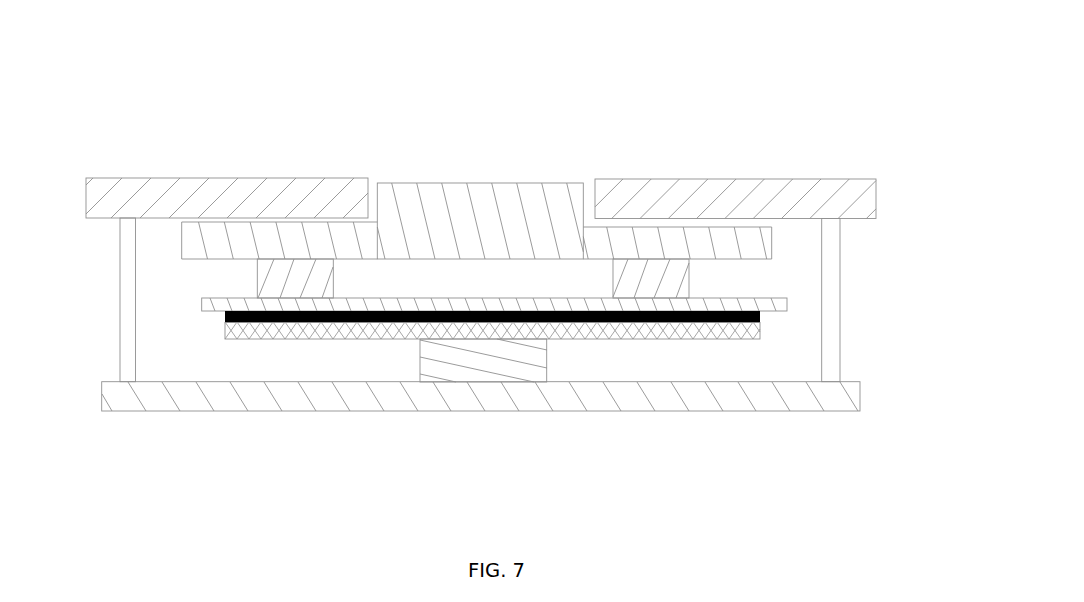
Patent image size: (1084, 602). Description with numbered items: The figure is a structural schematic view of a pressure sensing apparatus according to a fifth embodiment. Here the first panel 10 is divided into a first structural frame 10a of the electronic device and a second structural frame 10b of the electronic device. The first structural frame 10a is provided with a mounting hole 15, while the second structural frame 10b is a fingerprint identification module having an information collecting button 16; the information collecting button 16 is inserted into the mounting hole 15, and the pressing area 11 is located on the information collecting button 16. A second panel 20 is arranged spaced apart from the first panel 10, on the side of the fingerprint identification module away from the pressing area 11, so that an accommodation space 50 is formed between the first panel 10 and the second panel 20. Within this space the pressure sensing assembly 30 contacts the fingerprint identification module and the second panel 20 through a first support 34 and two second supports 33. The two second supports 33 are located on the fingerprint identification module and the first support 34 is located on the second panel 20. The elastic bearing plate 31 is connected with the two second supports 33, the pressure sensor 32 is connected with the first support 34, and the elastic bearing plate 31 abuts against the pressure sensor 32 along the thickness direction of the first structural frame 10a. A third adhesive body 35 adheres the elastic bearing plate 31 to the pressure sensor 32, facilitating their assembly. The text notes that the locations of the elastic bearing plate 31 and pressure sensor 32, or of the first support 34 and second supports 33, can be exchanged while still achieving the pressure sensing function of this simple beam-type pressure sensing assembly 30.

The first panel 10 is at (343, 123).
The first structural frame of electronic device 10a is at (728, 202).
The second structural frame of electronic device 10b is at (413, 217).
The pressing area 11 is at (502, 182).
The mounting hole 15 is at (590, 190).
The information collecting button 16 is at (458, 202).
The second panel 20 is at (700, 403).
The pressure sensing assembly 30 is at (618, 338).
The elastic bearing plate 31 is at (753, 305).
The pressure sensor 32 is at (760, 328).
The second supports 33 is at (293, 281).
The first support 34 is at (475, 365).
The third adhesive body 35 is at (225, 320).
The accommodation space 50 is at (173, 248).